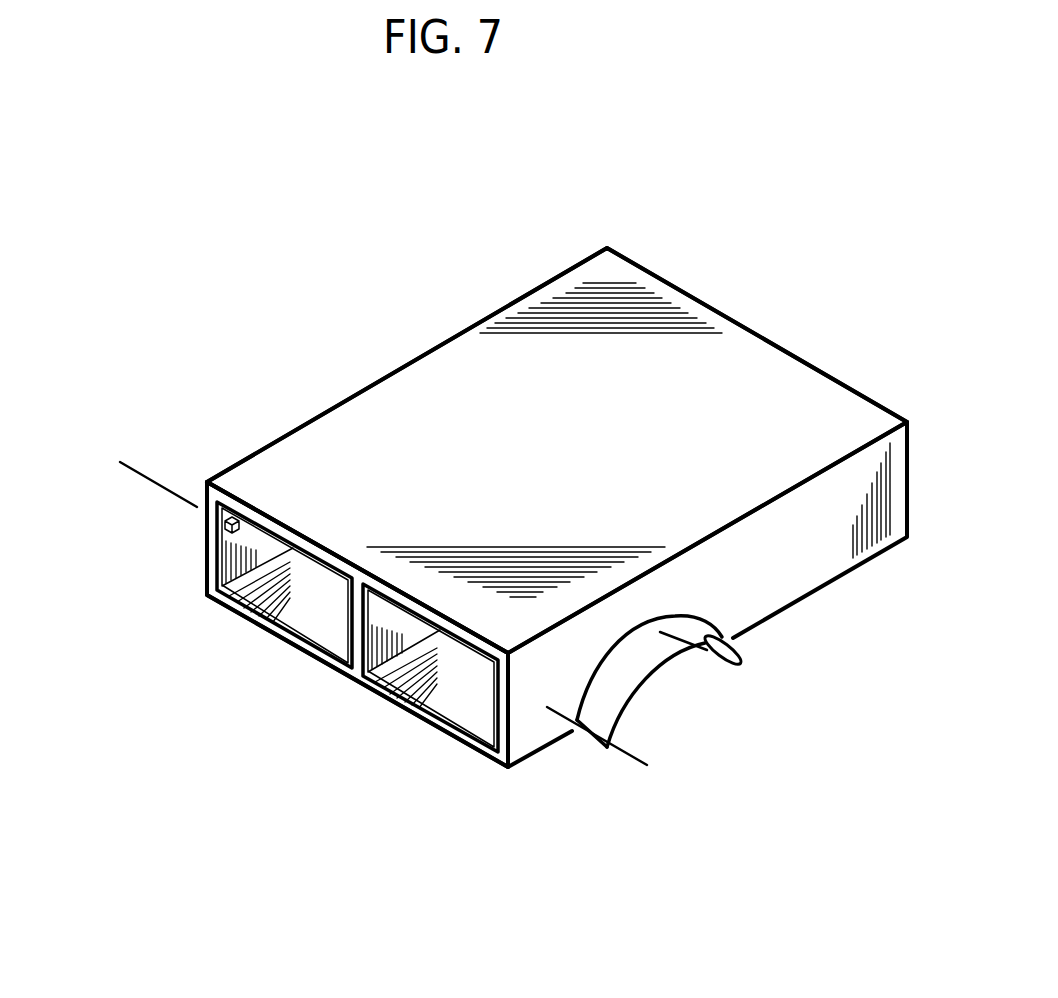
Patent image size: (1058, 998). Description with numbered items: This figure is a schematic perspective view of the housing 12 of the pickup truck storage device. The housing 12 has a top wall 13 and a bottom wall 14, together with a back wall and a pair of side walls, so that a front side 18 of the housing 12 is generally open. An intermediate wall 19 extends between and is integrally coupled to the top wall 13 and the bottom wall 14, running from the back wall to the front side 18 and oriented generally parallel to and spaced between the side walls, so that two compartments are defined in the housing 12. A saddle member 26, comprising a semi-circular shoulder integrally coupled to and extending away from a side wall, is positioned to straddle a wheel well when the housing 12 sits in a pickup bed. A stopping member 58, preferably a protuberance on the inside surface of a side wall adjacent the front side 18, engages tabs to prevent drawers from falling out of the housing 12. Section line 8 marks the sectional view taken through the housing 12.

The housing 12 is at (907, 420).
The top wall 13 is at (422, 373).
The bottom wall 14 is at (473, 715).
The front side 18 is at (337, 677).
The intermediate wall 19 is at (383, 657).
The saddle member 26 is at (662, 633).
The stopping member 58 is at (230, 533).
The section line 8- 8 is at (633, 762).